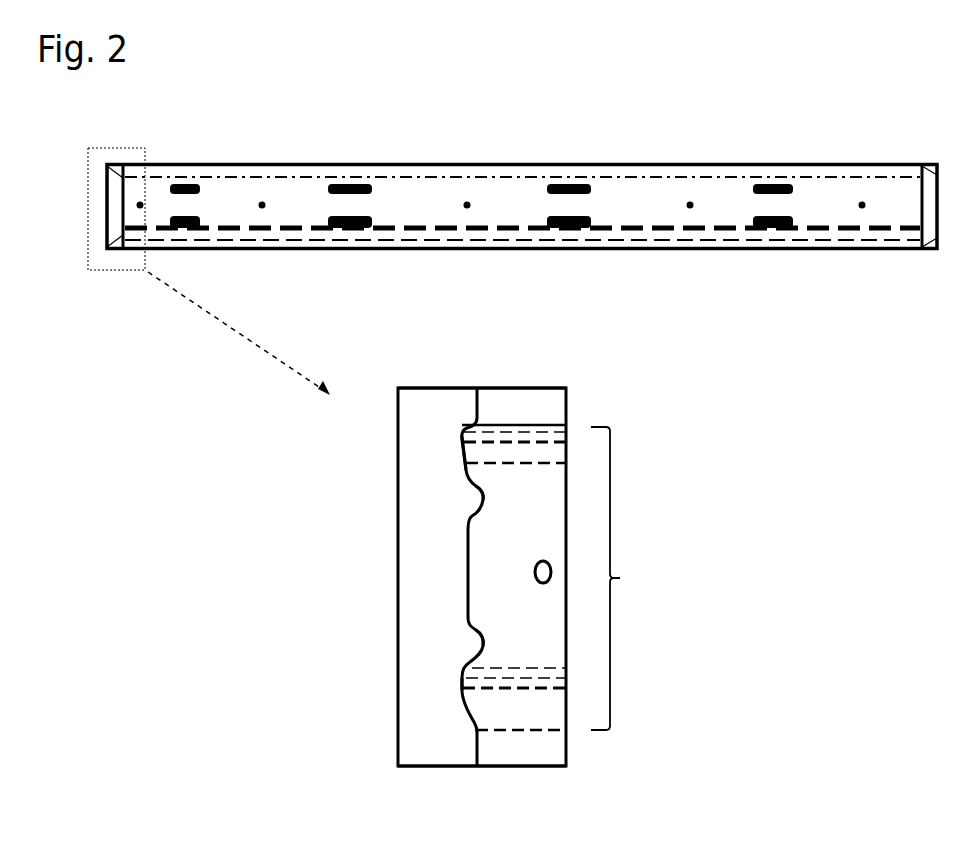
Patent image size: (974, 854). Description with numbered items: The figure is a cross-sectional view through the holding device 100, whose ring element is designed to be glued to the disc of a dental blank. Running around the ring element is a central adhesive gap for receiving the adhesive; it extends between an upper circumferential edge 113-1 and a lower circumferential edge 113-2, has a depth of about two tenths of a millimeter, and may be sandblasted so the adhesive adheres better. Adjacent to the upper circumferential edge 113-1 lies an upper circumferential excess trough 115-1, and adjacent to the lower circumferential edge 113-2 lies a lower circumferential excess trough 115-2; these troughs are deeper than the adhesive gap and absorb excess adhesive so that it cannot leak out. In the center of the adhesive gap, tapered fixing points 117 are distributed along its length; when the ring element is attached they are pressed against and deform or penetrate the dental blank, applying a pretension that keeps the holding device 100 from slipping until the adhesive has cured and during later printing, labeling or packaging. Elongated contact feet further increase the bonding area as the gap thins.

The holding device 100 is at (522, 242).
The upper circumferential edge 113-1 is at (477, 412).
The lower circumferential edge 113-2 is at (477, 745).
The upper circumferential excess trough 115-1 is at (462, 438).
The lower circumferential excess trough 115-2 is at (463, 686).
The fixing point 117 is at (262, 202).